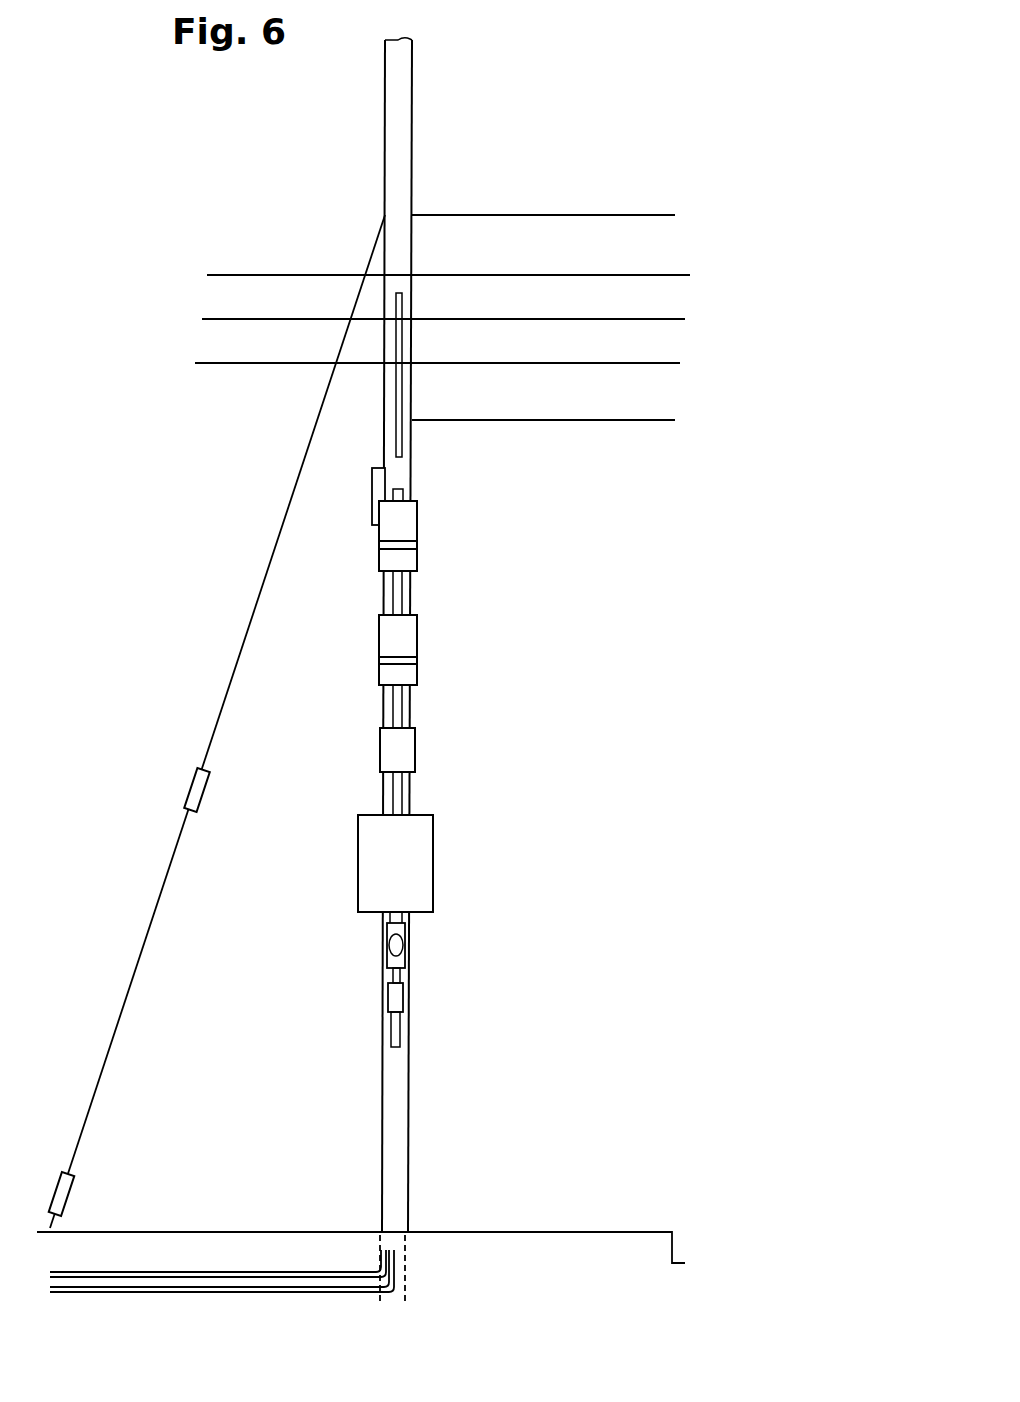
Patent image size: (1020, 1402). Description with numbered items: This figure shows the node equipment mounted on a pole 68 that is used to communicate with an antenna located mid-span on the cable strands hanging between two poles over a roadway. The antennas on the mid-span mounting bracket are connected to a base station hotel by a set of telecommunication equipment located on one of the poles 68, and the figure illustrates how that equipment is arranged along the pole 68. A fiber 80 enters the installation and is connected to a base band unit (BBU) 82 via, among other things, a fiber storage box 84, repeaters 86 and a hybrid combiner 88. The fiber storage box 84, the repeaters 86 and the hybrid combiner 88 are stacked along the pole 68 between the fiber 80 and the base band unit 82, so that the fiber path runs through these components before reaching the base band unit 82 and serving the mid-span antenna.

The pole 68 is at (378, 1083).
The fiber 80 is at (643, 275).
The base band unit (BBU) 82 is at (358, 865).
The fiber storage box 84 is at (370, 478).
The repeaters 86 is at (380, 545).
The hybrid combiner 88 is at (380, 752).